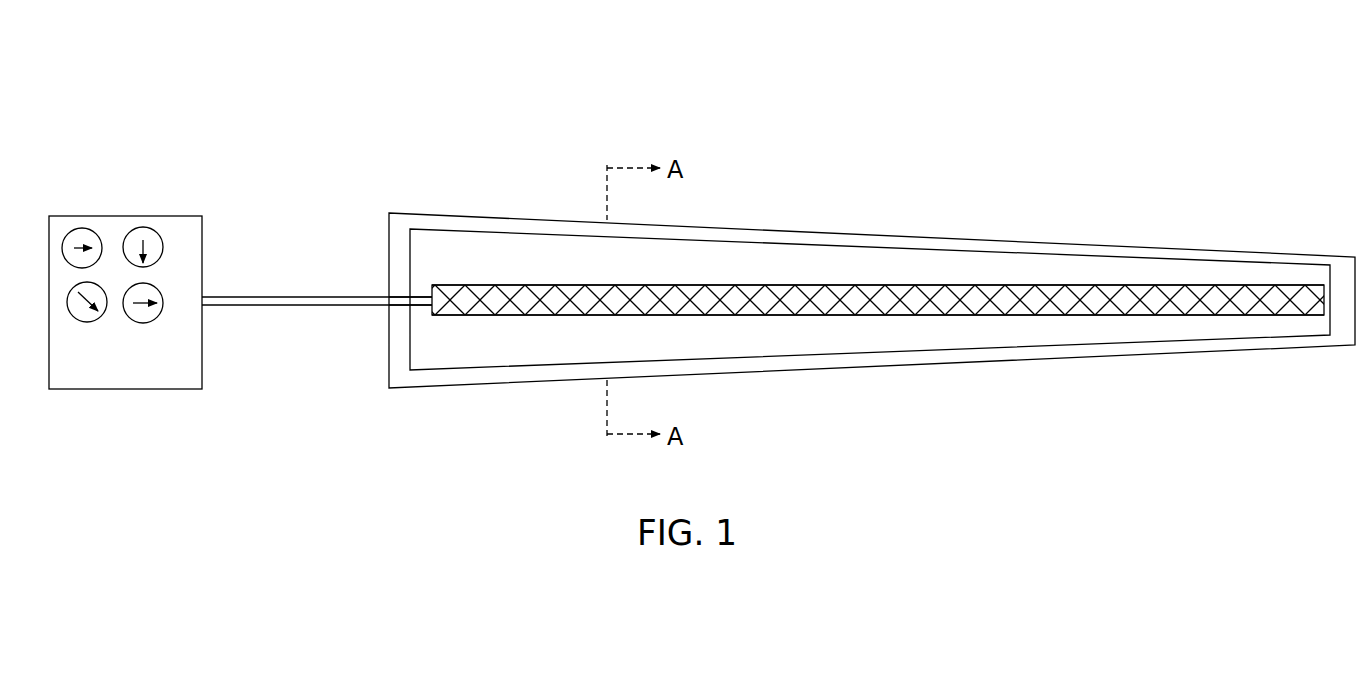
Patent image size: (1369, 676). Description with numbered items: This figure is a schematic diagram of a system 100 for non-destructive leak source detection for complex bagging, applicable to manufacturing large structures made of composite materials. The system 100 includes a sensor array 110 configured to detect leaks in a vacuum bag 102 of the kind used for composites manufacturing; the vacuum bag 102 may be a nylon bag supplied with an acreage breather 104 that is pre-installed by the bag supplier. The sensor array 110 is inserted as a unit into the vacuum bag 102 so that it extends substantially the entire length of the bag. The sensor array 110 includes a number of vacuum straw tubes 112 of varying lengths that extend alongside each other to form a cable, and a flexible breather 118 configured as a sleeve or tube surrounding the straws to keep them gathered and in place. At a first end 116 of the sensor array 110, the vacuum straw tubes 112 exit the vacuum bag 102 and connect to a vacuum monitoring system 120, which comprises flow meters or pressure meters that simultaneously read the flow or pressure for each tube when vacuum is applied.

The system 100 is at (248, 133).
The vacuum bag 102 is at (872, 235).
The acreage breather 104 is at (537, 354).
The sensor array 110 is at (482, 283).
The vacuum straw tubes 112 is at (242, 307).
The first end of sensor array 116 is at (360, 296).
The flexible breather 118 is at (1138, 309).
The vacuum monitoring system 120 is at (125, 216).